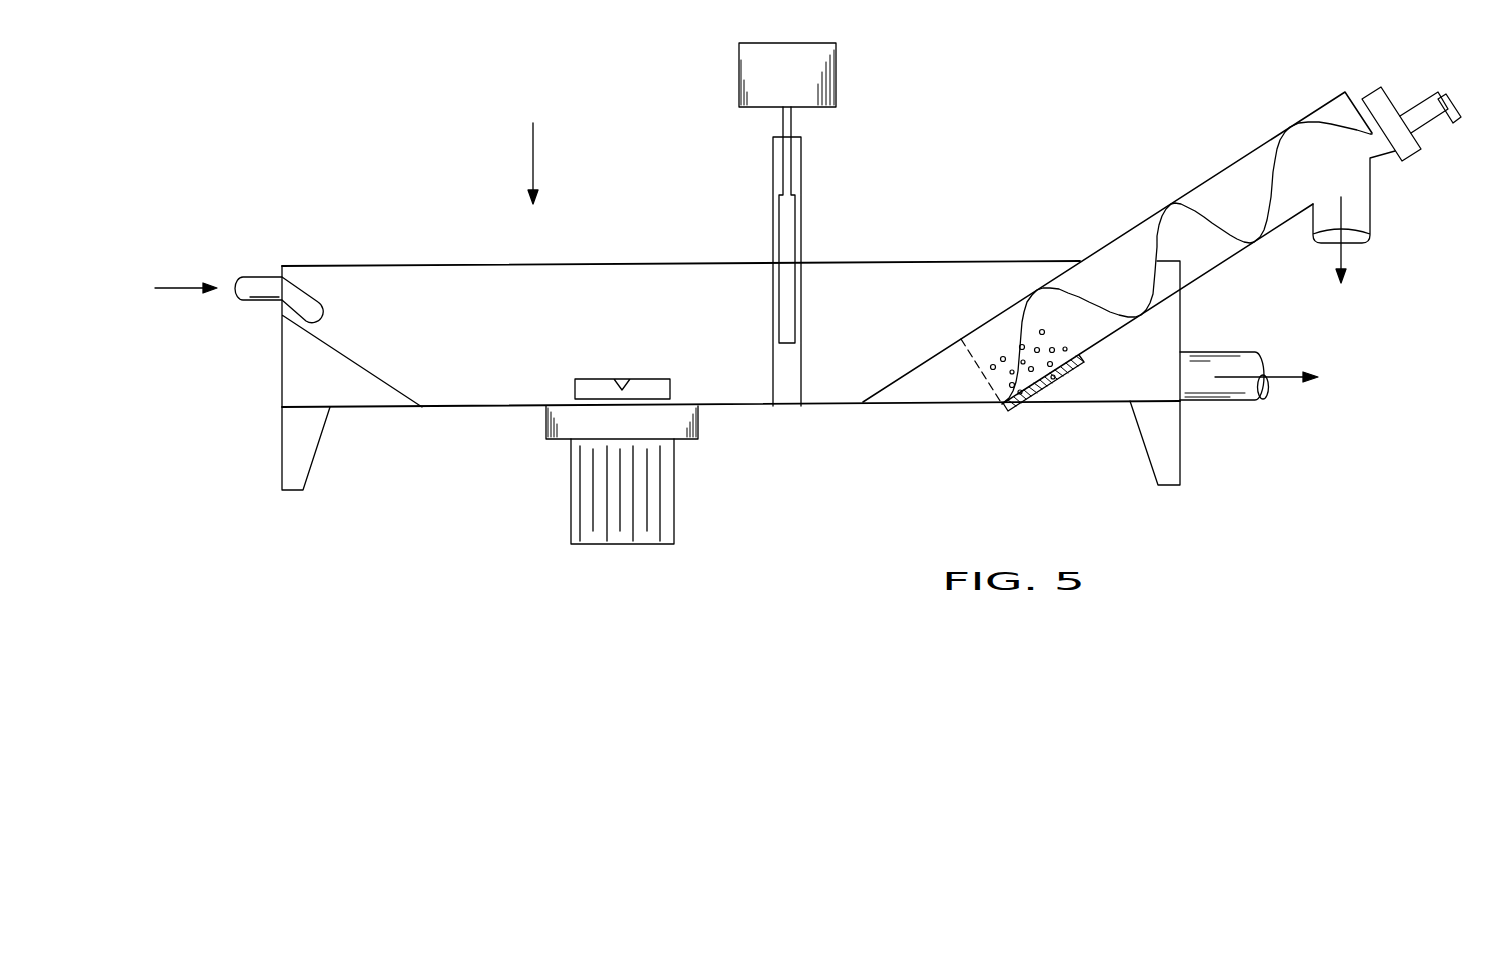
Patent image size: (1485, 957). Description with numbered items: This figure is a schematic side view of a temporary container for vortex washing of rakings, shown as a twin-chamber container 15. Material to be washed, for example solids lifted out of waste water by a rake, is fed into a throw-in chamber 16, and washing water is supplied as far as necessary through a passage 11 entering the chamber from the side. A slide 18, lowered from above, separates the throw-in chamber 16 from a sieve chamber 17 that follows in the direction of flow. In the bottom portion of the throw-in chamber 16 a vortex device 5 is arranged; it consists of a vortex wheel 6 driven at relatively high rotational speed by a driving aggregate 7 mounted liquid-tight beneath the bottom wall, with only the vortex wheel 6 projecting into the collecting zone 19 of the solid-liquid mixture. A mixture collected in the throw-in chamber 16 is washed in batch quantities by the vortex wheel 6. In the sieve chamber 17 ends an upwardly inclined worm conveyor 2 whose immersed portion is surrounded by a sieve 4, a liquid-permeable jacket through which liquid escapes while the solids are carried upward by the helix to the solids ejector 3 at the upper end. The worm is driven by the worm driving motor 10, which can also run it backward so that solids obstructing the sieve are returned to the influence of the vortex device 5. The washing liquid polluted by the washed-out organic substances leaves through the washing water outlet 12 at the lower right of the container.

The worm conveyor 2 is at (1238, 182).
The solids ejector 3 is at (1355, 212).
The sieve 4 is at (1032, 358).
The vortex device 5 is at (561, 461).
The vortex wheel 6 is at (575, 388).
The driving aggregate 7 is at (575, 507).
The worm driving motor 10 is at (1428, 125).
The passage 11 is at (262, 282).
The washing water outlet 12 is at (1225, 402).
The twin-chamber container 15 is at (815, 442).
The throw-in chamber 16 is at (534, 144).
The sieve chamber 17 is at (731, 368).
The slide 18 is at (813, 71).
The collecting zone 19 is at (650, 290).